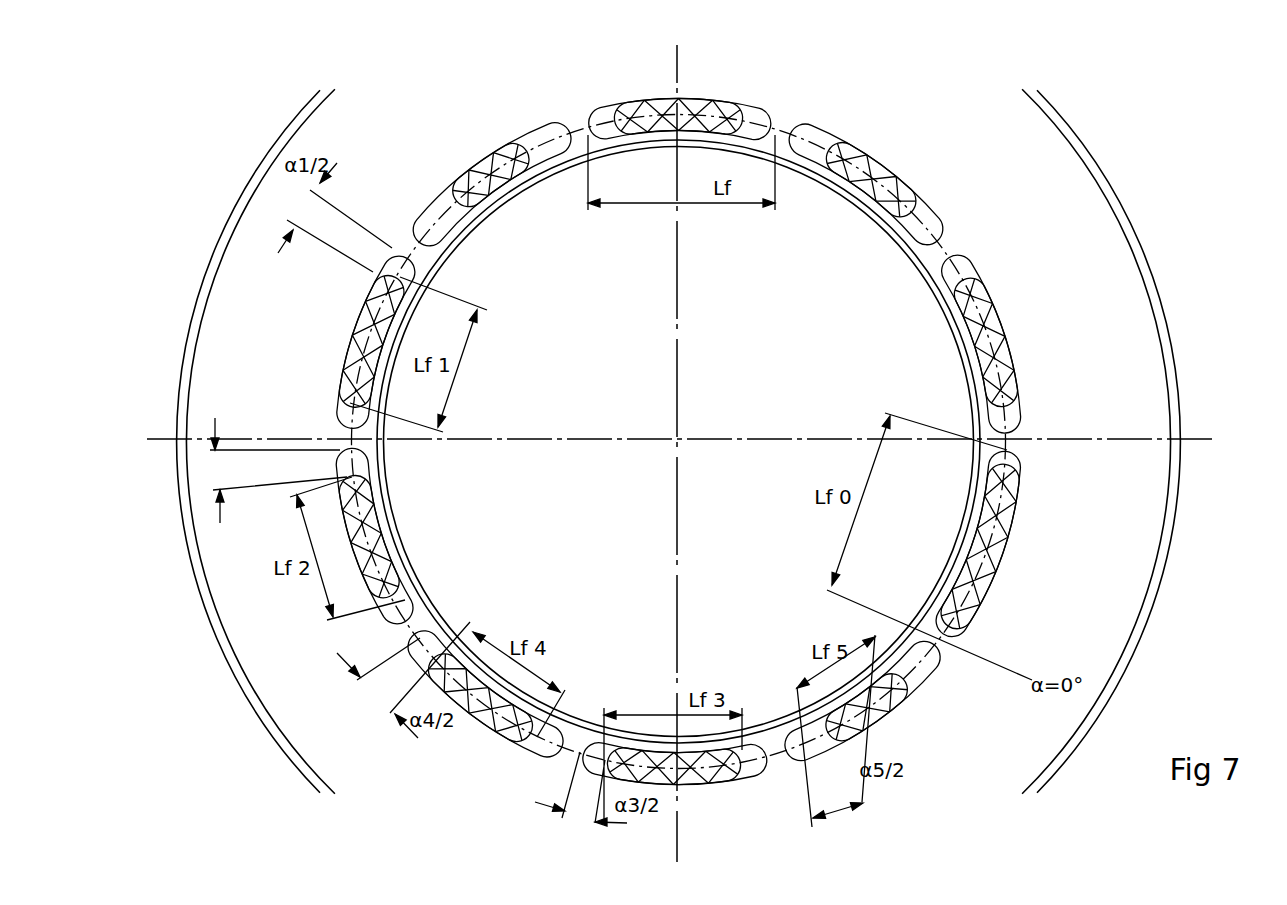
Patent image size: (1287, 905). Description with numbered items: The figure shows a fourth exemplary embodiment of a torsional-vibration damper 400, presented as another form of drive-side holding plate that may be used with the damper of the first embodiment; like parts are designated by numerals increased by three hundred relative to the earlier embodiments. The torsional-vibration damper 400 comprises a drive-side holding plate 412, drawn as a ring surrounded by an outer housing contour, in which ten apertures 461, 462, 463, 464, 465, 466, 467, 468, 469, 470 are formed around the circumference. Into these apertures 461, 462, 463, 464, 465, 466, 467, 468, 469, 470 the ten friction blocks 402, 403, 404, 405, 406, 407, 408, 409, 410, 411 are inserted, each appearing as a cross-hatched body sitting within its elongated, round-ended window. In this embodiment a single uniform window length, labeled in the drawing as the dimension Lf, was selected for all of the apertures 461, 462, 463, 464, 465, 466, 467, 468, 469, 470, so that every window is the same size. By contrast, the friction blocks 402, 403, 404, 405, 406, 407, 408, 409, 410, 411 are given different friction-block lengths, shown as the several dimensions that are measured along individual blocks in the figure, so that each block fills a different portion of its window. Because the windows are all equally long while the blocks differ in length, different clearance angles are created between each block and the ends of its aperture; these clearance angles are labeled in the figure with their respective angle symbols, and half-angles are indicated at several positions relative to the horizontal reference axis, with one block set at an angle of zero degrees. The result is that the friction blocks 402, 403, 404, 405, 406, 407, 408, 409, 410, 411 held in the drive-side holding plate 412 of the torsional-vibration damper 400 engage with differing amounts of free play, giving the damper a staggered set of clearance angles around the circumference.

The torsional-vibration damper 400 is at (272, 122).
The friction block 402 is at (348, 307).
The friction block 403 is at (355, 578).
The friction block 404 is at (663, 780).
The friction block 405 is at (470, 723).
The friction block 406 is at (877, 723).
The friction block 407 is at (1020, 510).
The friction block 408 is at (1020, 372).
The friction block 409 is at (907, 186).
The friction block 410 is at (705, 115).
The friction block 411 is at (490, 160).
The drive-side holding plate 412 is at (1092, 168).
The aperture 461 is at (340, 418).
The aperture 462 is at (428, 231).
The aperture 463 is at (603, 112).
The aperture 464 is at (820, 137).
The aperture 465 is at (972, 270).
The aperture 466 is at (1027, 452).
The aperture 467 is at (927, 663).
The aperture 468 is at (756, 772).
The aperture 469 is at (540, 750).
The aperture 470 is at (395, 620).